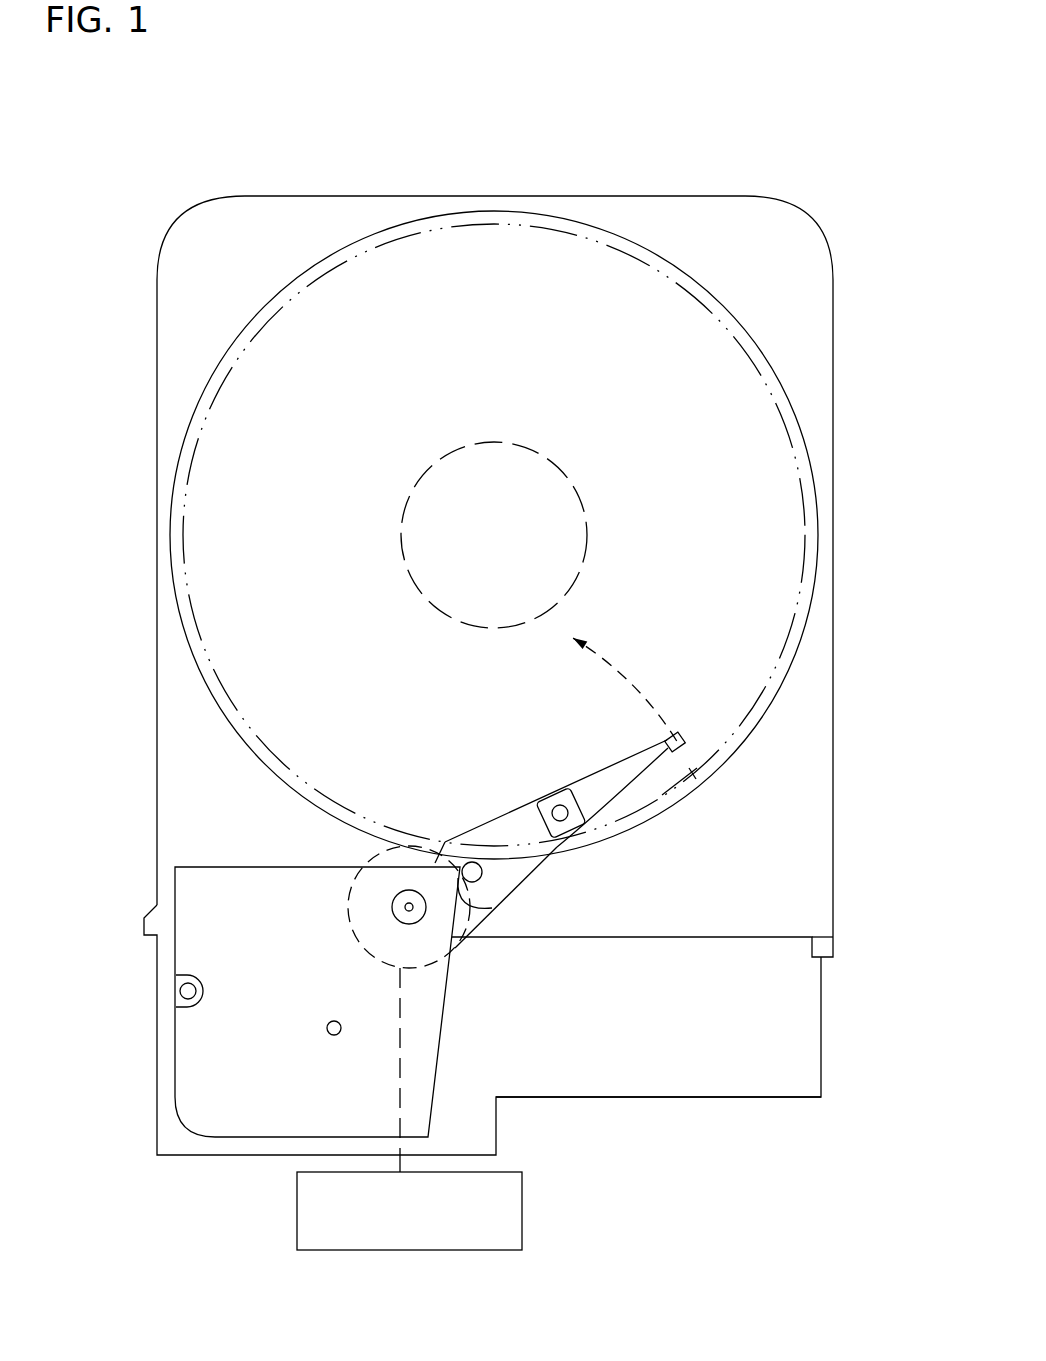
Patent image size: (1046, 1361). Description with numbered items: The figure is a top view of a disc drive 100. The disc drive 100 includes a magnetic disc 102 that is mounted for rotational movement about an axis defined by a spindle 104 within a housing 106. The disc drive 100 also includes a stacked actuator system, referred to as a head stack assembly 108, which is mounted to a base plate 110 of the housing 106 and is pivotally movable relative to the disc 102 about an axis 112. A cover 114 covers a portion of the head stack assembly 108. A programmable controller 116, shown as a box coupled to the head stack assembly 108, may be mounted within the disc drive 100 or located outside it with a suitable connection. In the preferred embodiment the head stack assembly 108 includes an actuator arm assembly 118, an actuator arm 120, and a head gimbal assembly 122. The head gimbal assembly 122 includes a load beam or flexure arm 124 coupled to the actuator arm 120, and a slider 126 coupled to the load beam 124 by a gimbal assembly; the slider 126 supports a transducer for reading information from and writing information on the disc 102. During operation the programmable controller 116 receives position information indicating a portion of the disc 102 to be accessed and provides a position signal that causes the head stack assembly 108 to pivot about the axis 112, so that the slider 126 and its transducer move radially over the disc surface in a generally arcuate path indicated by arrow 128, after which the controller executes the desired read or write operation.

The disc drive 100 is at (535, 616).
The magnetic disc 102 is at (530, 318).
The spindle 104 is at (532, 502).
The housing 106 is at (836, 345).
The head stack assembly 108 is at (571, 824).
The base plate 110 is at (652, 1100).
The axis 112 is at (392, 903).
The cover 114 is at (184, 892).
The programmable controller 116 is at (528, 1198).
The actuator arm assembly 118 is at (411, 840).
The actuator arm 120 is at (500, 895).
The head gimbal assembly 122 is at (638, 750).
The load beam 124 is at (576, 779).
The slider 126 is at (690, 746).
The arrow 128 is at (612, 662).